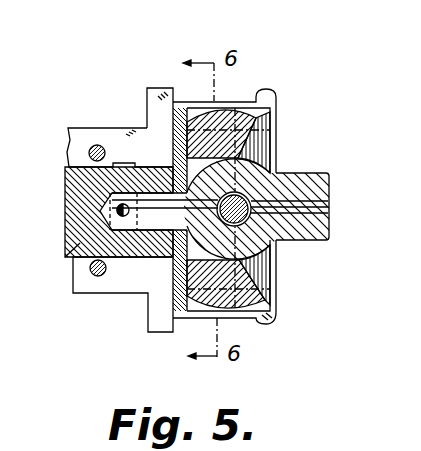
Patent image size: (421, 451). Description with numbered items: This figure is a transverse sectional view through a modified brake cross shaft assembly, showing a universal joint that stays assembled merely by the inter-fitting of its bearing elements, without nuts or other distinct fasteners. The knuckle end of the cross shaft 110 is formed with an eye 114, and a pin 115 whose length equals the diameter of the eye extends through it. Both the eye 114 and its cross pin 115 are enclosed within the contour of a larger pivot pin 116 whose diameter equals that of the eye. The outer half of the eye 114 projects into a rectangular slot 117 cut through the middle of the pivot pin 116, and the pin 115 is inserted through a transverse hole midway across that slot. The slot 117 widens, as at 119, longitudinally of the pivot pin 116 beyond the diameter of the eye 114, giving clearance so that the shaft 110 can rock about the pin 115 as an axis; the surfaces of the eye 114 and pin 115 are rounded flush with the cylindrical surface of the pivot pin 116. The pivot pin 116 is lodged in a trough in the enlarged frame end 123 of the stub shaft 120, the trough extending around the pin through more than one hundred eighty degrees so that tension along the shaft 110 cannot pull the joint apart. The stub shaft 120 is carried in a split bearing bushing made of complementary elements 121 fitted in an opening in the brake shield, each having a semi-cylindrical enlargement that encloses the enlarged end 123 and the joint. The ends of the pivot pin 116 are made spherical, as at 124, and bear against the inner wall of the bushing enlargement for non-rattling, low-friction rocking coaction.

The cross shaft 110 is at (332, 230).
The eye 114 is at (240, 175).
The pin 115 is at (248, 203).
The pivot pin 116 is at (275, 117).
The rectangular slot 117 is at (225, 115).
The widened portion of slot 119 is at (275, 132).
The stub shaft 120 is at (70, 258).
The split bearing bushing elements 121 is at (118, 128).
The enlarged frame end 123 is at (160, 100).
The spherical ends of pin 124 is at (277, 313).